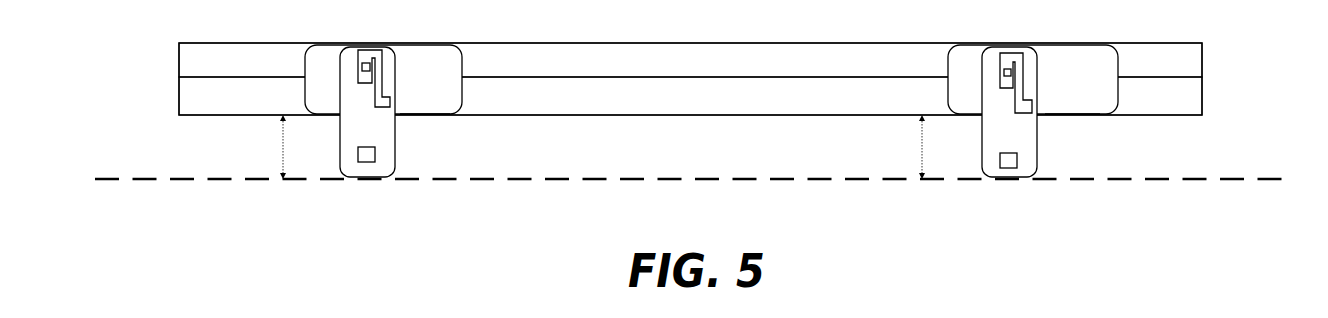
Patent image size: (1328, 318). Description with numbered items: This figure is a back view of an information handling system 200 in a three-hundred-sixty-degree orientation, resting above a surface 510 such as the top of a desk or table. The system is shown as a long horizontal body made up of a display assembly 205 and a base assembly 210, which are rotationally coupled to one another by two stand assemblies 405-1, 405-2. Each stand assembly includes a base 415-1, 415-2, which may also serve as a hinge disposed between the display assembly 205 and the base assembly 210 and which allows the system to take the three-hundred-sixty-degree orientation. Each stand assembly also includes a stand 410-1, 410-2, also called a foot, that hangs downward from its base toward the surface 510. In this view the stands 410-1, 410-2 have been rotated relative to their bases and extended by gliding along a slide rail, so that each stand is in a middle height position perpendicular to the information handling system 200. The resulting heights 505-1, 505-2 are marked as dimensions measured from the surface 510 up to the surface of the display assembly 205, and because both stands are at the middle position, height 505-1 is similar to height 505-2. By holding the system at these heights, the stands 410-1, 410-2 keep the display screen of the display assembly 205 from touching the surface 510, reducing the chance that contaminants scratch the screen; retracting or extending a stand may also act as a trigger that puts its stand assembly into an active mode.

The information handling system 200 is at (192, 43).
The base assembly 210 is at (1202, 65).
The display assembly 205 is at (1202, 108).
The stand assembly 405-1 is at (320, 44).
The stand assembly 405-2 is at (970, 43).
The stand 410-1 is at (393, 118).
The stand 410-2 is at (1035, 120).
The base 415-1 is at (427, 110).
The base 415-2 is at (1067, 115).
The height 505-1 is at (283, 147).
The height 505-2 is at (923, 147).
The surface 510 is at (107, 180).